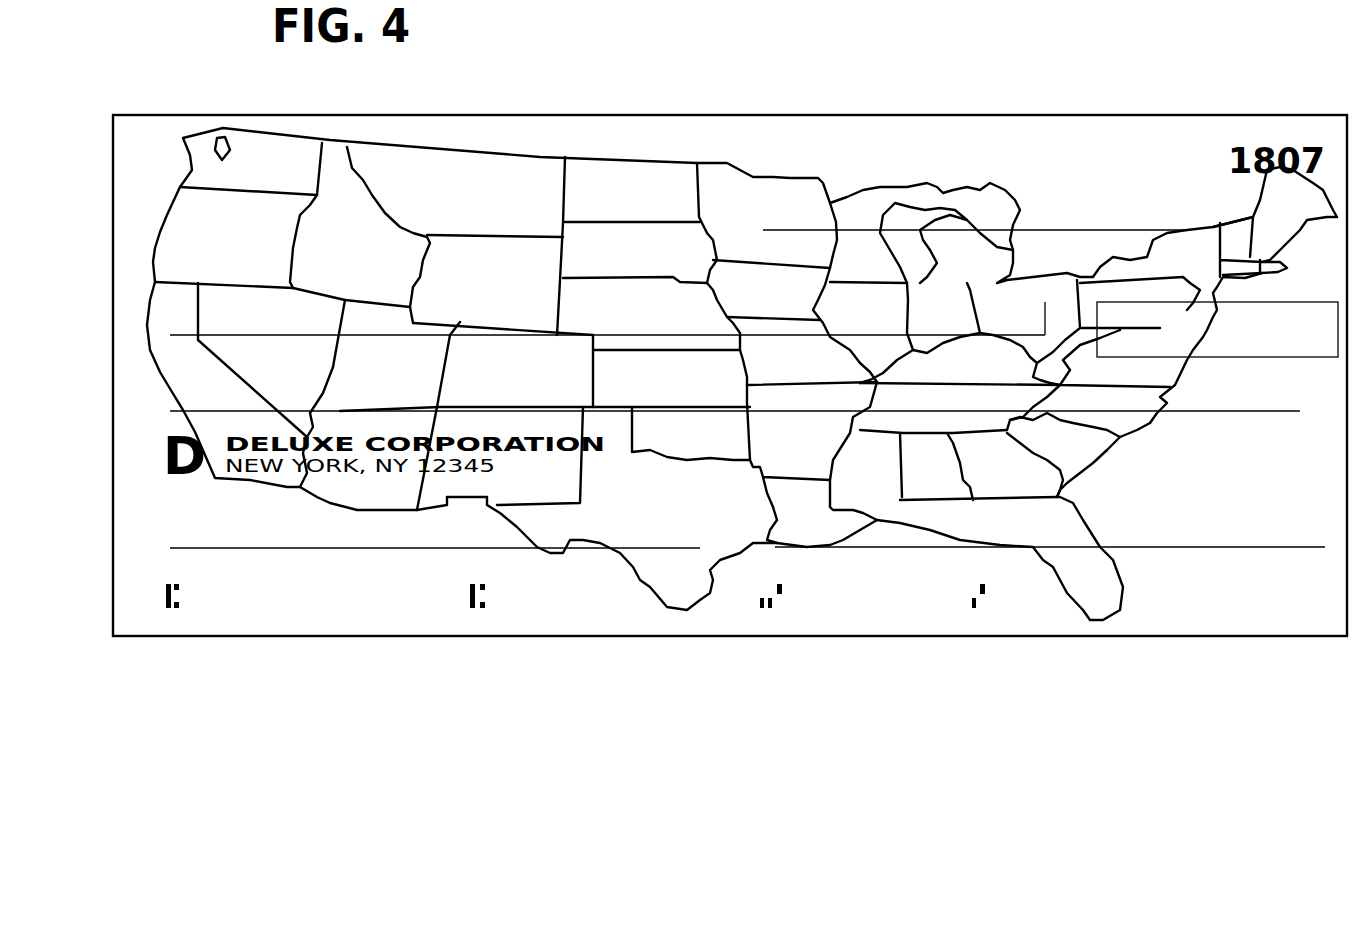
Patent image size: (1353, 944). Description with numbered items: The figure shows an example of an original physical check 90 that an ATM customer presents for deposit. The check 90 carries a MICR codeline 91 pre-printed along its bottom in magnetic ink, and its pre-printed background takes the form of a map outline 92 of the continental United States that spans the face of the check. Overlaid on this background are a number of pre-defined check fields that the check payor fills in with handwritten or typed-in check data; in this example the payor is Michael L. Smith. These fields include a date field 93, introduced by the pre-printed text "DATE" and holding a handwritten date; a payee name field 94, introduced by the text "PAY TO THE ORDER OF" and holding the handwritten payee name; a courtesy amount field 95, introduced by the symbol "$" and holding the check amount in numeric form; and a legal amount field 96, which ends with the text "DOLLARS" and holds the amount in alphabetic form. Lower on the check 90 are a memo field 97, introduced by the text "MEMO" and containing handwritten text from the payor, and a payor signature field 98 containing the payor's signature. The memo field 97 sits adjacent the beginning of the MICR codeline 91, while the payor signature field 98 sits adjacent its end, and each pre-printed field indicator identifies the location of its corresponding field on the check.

The check 90 is at (1263, 88).
The MICR codeline 91 is at (152, 591).
The map outline 92 is at (637, 157).
The date field 93 is at (835, 197).
The payee name field 94 is at (323, 312).
The courtesy amount field 95 is at (1110, 313).
The legal amount field 96 is at (185, 379).
The memo field 97 is at (262, 528).
The payor signature field 98 is at (855, 530).